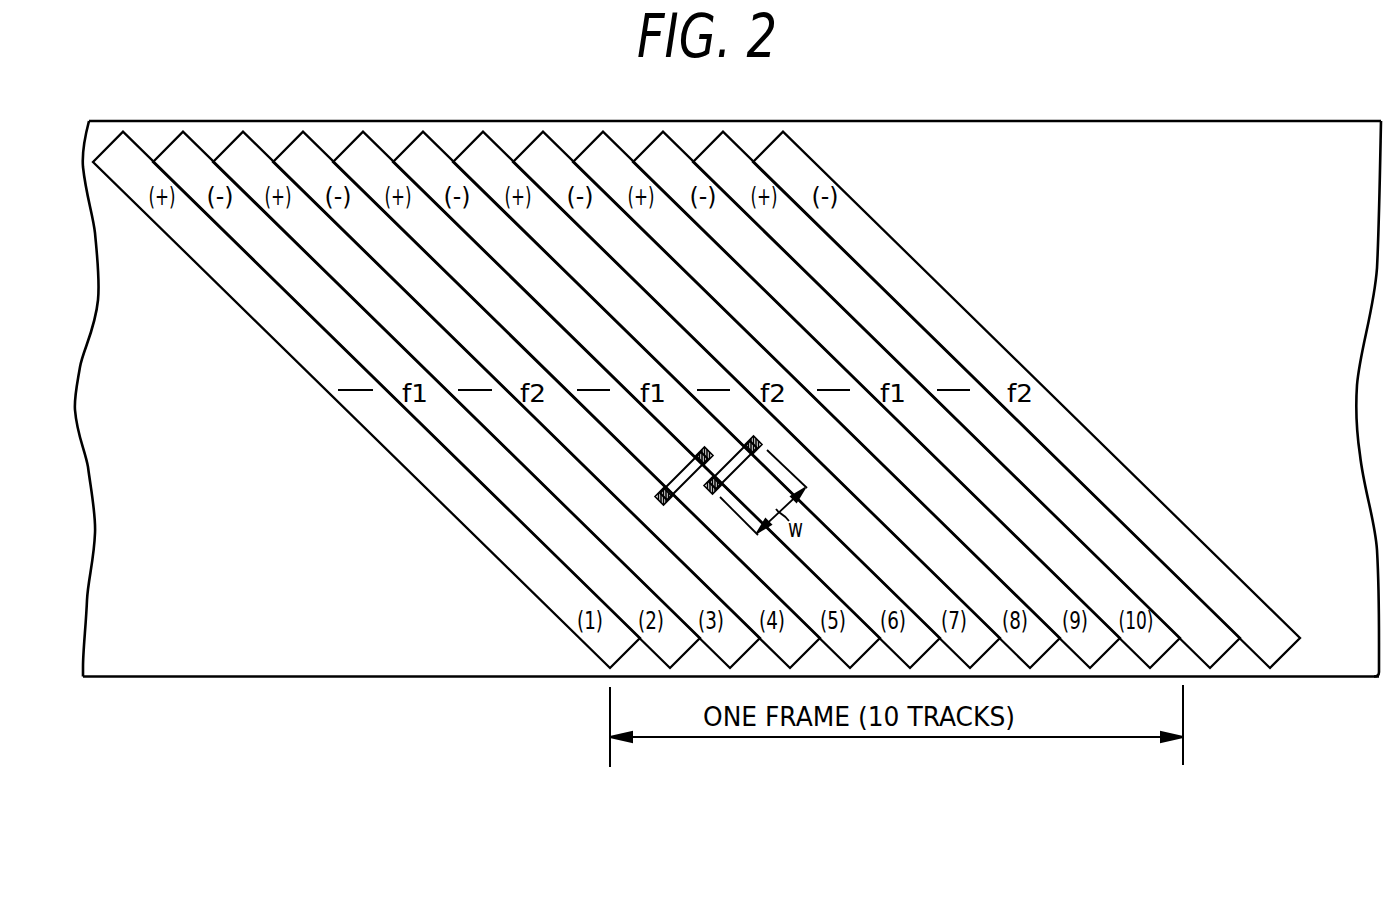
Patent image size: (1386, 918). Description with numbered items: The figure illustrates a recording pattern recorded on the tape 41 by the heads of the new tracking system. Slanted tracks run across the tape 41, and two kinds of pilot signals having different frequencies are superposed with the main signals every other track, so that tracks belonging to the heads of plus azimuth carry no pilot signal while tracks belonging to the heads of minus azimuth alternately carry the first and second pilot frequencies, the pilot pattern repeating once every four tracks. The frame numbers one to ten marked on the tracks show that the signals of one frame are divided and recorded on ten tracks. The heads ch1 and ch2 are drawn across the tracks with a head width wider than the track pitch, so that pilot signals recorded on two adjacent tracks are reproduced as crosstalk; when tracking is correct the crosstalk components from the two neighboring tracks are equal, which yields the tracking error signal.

The tape 41 is at (1040, 121).
The ch-1 head ch1 is at (673, 470).
The ch-2 head ch2 is at (742, 473).